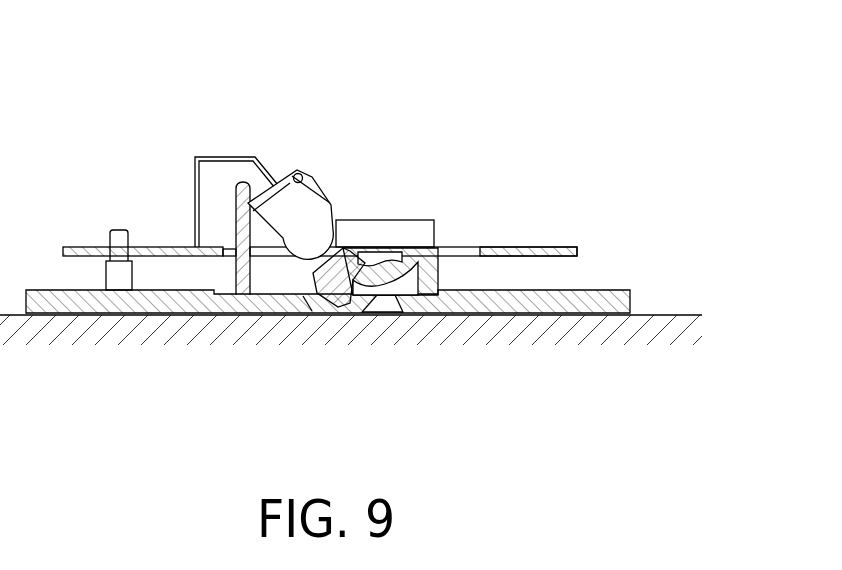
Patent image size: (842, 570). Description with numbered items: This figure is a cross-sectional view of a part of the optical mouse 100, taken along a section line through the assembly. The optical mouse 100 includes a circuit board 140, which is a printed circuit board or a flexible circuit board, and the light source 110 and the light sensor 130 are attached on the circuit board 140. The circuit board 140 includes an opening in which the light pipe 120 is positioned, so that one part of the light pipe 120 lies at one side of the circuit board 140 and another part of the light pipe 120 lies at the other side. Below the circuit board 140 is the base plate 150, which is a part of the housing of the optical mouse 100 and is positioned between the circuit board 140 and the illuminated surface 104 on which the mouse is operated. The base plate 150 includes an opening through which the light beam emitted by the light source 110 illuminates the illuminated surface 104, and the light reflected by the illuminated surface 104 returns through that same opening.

The optical mouse 100 is at (143, 62).
The illuminated surface 104 is at (668, 315).
The light source 110 is at (321, 165).
The light pipe 120 is at (320, 187).
The light sensor 130 is at (400, 220).
The circuit board 140 is at (535, 245).
The base plate 150 is at (607, 290).